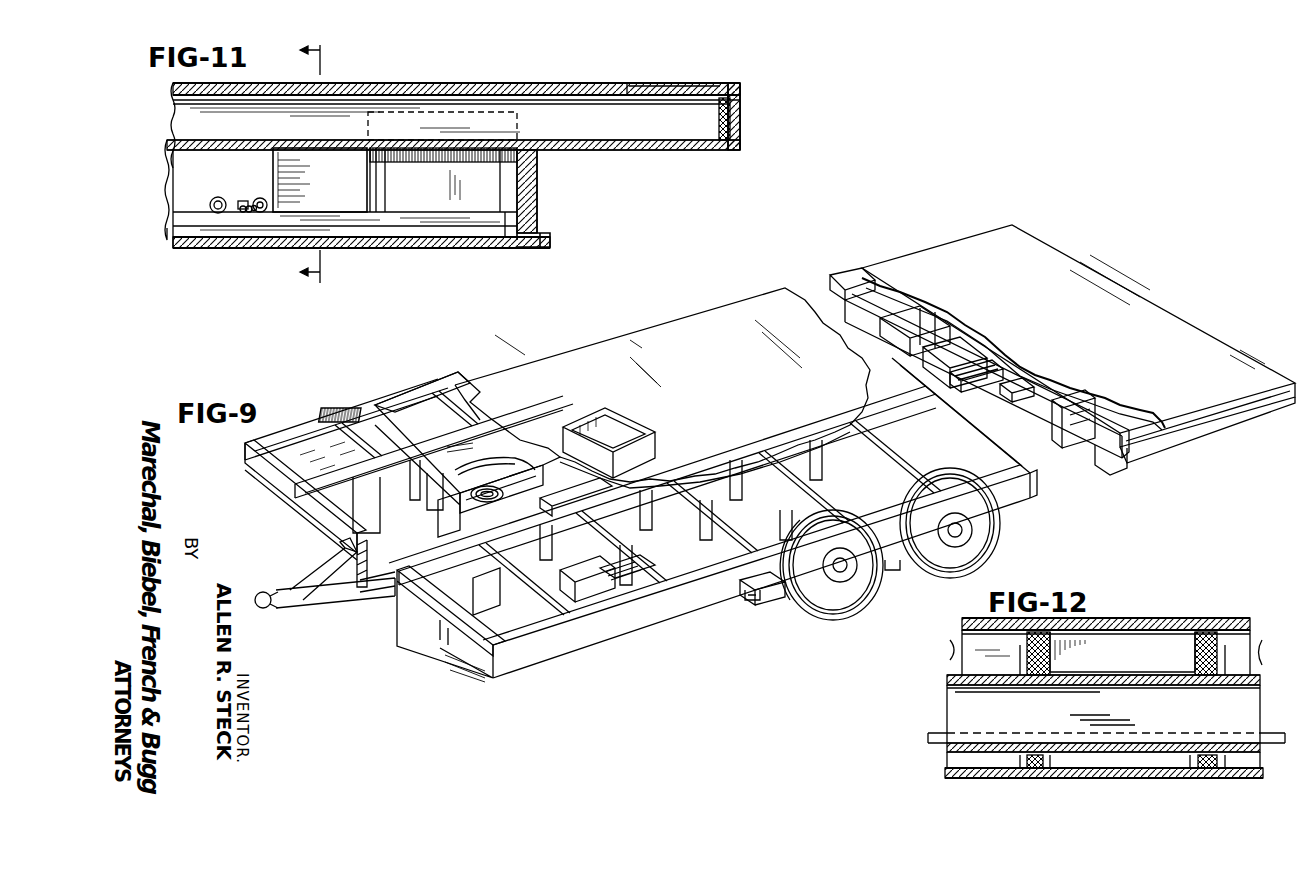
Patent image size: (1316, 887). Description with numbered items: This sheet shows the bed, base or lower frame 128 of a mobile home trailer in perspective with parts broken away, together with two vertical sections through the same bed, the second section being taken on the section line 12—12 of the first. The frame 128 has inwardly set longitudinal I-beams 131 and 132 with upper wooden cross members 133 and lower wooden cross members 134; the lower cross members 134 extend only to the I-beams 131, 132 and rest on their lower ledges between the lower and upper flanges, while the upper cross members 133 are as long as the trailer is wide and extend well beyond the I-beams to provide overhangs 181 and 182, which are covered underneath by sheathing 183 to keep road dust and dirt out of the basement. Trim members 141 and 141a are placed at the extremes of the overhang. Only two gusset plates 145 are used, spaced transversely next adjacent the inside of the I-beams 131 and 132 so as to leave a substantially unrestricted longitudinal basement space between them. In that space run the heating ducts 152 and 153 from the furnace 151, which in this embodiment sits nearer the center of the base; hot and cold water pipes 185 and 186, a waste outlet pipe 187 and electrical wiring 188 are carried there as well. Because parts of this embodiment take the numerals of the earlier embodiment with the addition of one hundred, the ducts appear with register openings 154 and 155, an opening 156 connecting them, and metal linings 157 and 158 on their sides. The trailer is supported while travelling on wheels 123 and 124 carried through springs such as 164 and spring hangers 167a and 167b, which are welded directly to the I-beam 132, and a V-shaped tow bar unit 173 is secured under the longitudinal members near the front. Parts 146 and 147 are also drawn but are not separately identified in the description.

In FIG. 11, the section line 12 is at (323, 162).
In FIG. 9, the wheel 123 is at (840, 605).
In FIG. 9, the wheel 124 is at (992, 535).
In FIG. 11, the base or bed or lower frame 128 is at (748, 82).
In FIG. 9, the base or bed or lower frame 128 is at (446, 684).
In FIG. 11, the longitudinal I-beam 131 is at (540, 200).
In FIG. 9, the longitudinal I-beam 131 is at (275, 515).
In FIG. 9, the longitudinal I-beam 132 is at (442, 642).
In FIG. 12, the upper wooden cross member 133 is at (1250, 646).
In FIG. 9, the upper wooden cross member 133 is at (582, 605).
In FIG. 11, the lower wooden cross member 134 is at (505, 230).
In FIG. 12, the lower wooden cross member 134 is at (1215, 768).
In FIG. 9, the lower wooden cross member 134 is at (915, 455).
In FIG. 11, the trim member 141 is at (742, 122).
In FIG. 9, the trim member 141 is at (342, 420).
In FIG. 9, the trim member 141a is at (545, 652).
In FIG. 11, the gusset plate 145 is at (450, 228).
In FIG. 12, the gusset plate 145 is at (1230, 663).
In FIG. 9, the gusset plate 145 is at (770, 470).
In FIG. 11, the deck plate 146 is at (438, 88).
In FIG. 12, the deck plate 146 is at (1220, 626).
In FIG. 9, the deck plate 146 is at (1080, 280).
In FIG. 11, the bottom channel 147 is at (400, 248).
In FIG. 12, the bottom channel 147 is at (1130, 777).
In FIG. 9, the bottom channel 147 is at (1058, 450).
In FIG. 9, the furnace 151 is at (602, 412).
In FIG. 11, the heating duct 152 is at (337, 190).
In FIG. 12, the heating duct 152 is at (960, 705).
In FIG. 9, the heating duct 152 is at (960, 345).
In FIG. 11, the heating duct 153 is at (560, 99).
In FIG. 12, the heating duct 153 is at (1143, 640).
In FIG. 9, the heating duct 153 is at (486, 446).
In FIG. 9, the register opening 154 is at (628, 592).
In FIG. 11, the register opening 155 is at (655, 88).
In FIG. 9, the register opening 155 is at (428, 402).
In FIG. 12, the opening 156 is at (1145, 686).
In FIG. 11, the metal lining 157 is at (378, 180).
In FIG. 12, the metal lining 157 is at (985, 756).
In FIG. 11, the metal lining 158 is at (725, 130).
In FIG. 9, the spring 164 is at (780, 600).
In FIG. 9, the spring hanger 167a is at (893, 562).
In FIG. 9, the spring hanger 167b is at (748, 600).
In FIG. 9, the tow bar unit 173 is at (305, 612).
In FIG. 9, the overhang 181 is at (945, 240).
In FIG. 9, the overhang 182 is at (1212, 450).
In FIG. 11, the sheathing 183 is at (607, 150).
In FIG. 9, the sheathing 183 is at (835, 287).
In FIG. 11, the hot water pipe 185 is at (245, 200).
In FIG. 9, the hot water pipe 185 is at (988, 370).
In FIG. 11, the cold water pipe 186 is at (246, 212).
In FIG. 9, the cold water pipe 186 is at (1025, 388).
In FIG. 11, the waste outlet pipe 187 is at (262, 213).
In FIG. 12, the waste outlet pipe 187 is at (930, 740).
In FIG. 9, the waste outlet pipe 187 is at (575, 500).
In FIG. 11, the electrical wiring 188 is at (210, 200).
In FIG. 9, the electrical wiring 188 is at (378, 596).